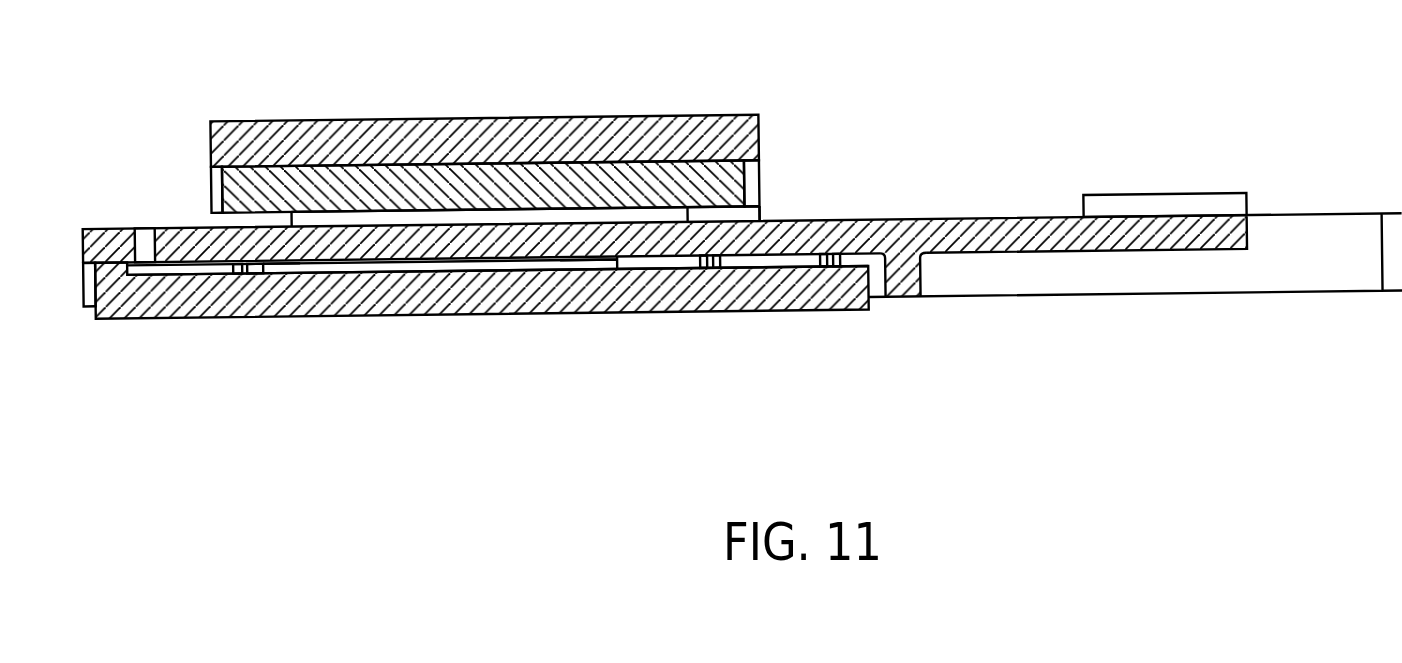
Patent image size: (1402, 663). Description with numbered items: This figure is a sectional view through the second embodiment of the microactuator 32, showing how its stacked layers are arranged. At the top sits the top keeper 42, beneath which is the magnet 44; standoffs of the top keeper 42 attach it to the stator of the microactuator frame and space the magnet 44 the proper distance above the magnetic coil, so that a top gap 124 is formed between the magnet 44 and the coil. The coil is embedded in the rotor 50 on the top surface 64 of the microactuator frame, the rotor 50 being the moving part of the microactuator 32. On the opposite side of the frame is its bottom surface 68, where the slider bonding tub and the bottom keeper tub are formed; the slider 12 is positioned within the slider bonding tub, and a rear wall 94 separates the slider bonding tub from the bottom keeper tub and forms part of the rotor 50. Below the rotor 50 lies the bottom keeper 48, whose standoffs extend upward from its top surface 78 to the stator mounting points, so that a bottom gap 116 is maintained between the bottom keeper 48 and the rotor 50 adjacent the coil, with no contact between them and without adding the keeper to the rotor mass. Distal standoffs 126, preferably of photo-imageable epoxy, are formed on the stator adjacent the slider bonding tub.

The slider 12 is at (1073, 280).
The microactuator 32 is at (423, 124).
The top keeper 42 is at (315, 115).
The magnet 44 is at (437, 164).
The bottom keeper 48 is at (376, 296).
The rotor 50 is at (514, 252).
The top surface 64 is at (688, 217).
The bottom surface 68 is at (619, 257).
The top surface 78 is at (292, 271).
The rear wall 94 is at (900, 299).
The bottom gap 116 is at (415, 265).
The top gap 124 is at (545, 213).
The distal standoffs 126 is at (1108, 199).